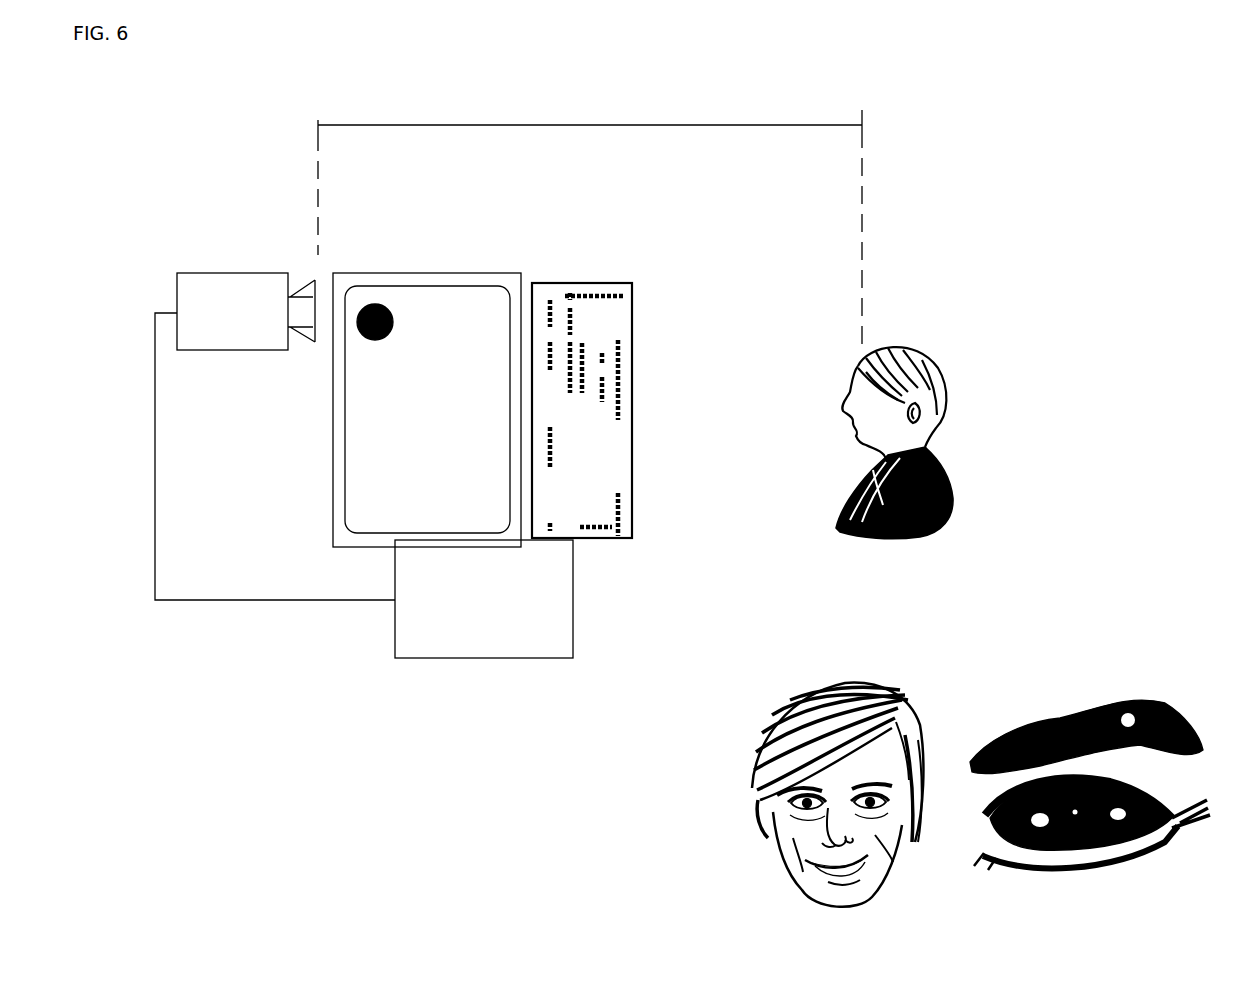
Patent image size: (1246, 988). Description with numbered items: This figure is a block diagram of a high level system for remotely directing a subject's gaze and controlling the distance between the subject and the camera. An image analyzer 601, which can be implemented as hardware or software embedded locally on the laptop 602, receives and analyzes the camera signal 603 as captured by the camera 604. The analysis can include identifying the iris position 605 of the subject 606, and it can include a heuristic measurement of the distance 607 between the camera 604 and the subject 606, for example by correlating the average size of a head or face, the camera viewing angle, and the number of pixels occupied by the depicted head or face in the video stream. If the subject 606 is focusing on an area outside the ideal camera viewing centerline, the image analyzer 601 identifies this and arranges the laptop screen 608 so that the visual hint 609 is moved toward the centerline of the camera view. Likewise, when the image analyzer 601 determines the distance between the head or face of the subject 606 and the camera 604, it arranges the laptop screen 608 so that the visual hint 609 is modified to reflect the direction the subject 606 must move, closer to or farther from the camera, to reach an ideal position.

The image analyzer 601 is at (482, 658).
The laptop 602 is at (333, 410).
The camera signal 603 is at (155, 555).
The camera 604 is at (236, 273).
The iris position 605 is at (1150, 800).
The subject 606 is at (897, 709).
The distance 607 is at (505, 124).
The laptop screen 608 is at (463, 286).
The visual hint 609 is at (375, 305).